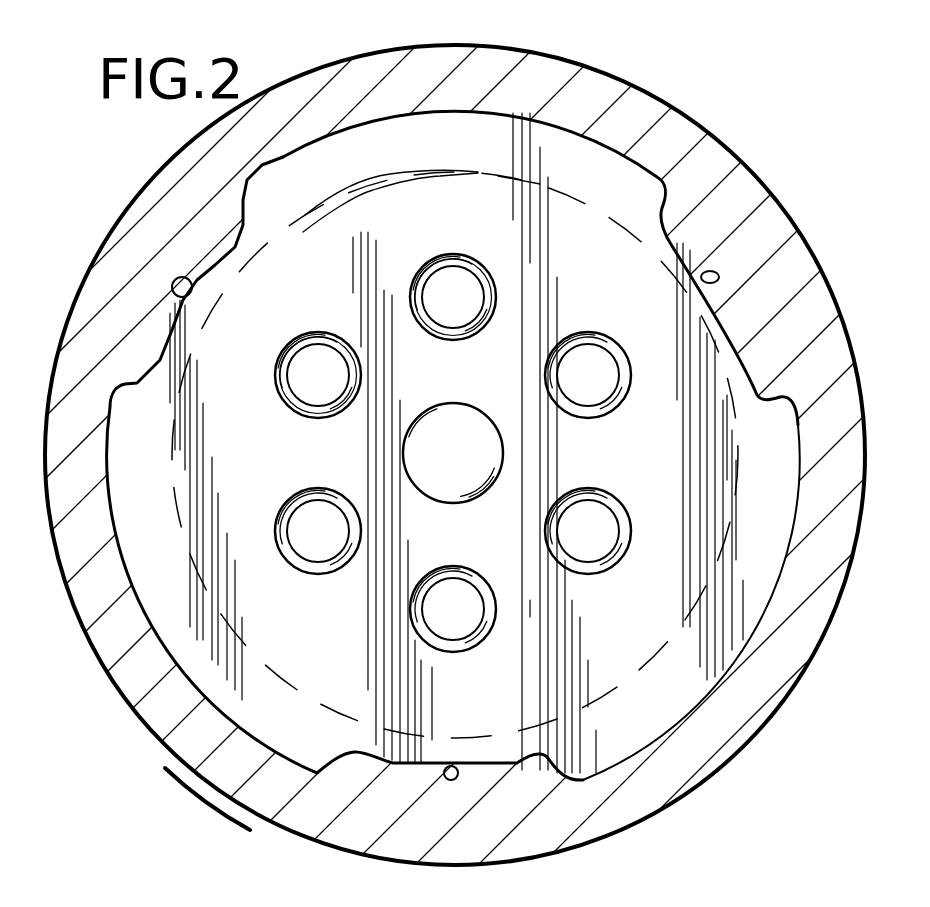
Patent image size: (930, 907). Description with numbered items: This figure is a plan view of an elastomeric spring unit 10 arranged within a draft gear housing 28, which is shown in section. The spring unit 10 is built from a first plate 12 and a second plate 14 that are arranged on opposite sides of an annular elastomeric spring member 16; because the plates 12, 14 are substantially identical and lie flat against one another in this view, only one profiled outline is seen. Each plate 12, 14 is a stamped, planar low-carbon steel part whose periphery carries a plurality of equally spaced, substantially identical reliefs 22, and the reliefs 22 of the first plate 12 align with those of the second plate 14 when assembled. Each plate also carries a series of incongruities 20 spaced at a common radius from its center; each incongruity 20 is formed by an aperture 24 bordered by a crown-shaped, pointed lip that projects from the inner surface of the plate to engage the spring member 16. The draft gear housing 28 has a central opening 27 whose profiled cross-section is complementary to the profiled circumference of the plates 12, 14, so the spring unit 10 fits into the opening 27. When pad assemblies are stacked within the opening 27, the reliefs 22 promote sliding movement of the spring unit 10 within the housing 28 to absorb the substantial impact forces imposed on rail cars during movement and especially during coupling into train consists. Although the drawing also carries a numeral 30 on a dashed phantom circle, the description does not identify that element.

The elastomeric spring unit 10 is at (612, 135).
The first plate 12 is at (643, 473).
The second plate 14 is at (470, 120).
The annular elastomeric spring member 16 is at (378, 182).
The incongruities 20 is at (333, 418).
The reliefs 22 is at (192, 279).
The aperture 24 is at (446, 325).
The central opening 27 is at (682, 678).
The draft gear housing 28 is at (185, 775).
The annular groove 30 is at (190, 535).